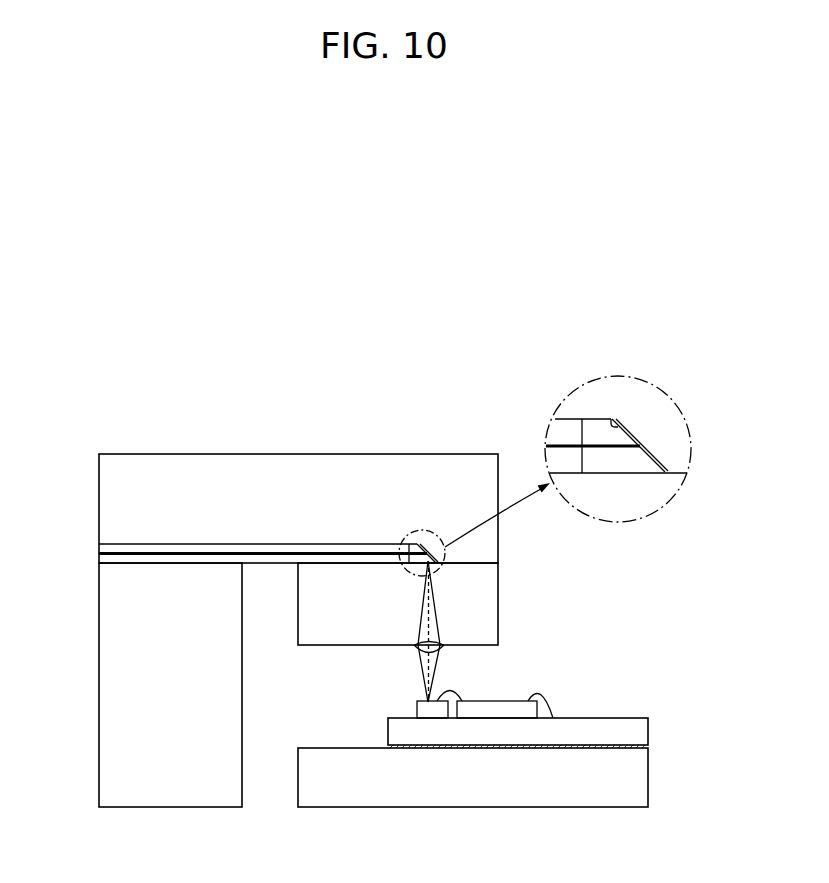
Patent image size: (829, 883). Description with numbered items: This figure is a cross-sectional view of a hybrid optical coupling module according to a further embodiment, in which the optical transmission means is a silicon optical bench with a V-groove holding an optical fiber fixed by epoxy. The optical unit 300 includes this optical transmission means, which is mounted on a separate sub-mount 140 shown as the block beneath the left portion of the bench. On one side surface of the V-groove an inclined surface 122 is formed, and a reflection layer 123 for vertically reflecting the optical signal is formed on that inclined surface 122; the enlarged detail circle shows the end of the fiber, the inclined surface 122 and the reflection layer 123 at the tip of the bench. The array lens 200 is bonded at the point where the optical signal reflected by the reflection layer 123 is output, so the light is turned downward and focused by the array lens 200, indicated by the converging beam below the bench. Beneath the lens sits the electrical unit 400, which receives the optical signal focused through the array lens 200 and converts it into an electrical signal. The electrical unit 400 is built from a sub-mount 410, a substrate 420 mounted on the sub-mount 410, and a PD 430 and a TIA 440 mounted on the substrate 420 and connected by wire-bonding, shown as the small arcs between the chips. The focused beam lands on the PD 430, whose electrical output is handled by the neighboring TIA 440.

The optical unit 300 is at (167, 451).
The inclined surface 122 is at (603, 418).
The reflection layer 123 is at (642, 448).
The sub-mount 140 is at (112, 693).
The array lens 200 is at (498, 619).
The electrical unit 400 is at (509, 735).
The sub-mount 410 is at (642, 779).
The substrate 420 is at (607, 718).
The PD 430 is at (417, 706).
The TIA 440 is at (505, 700).